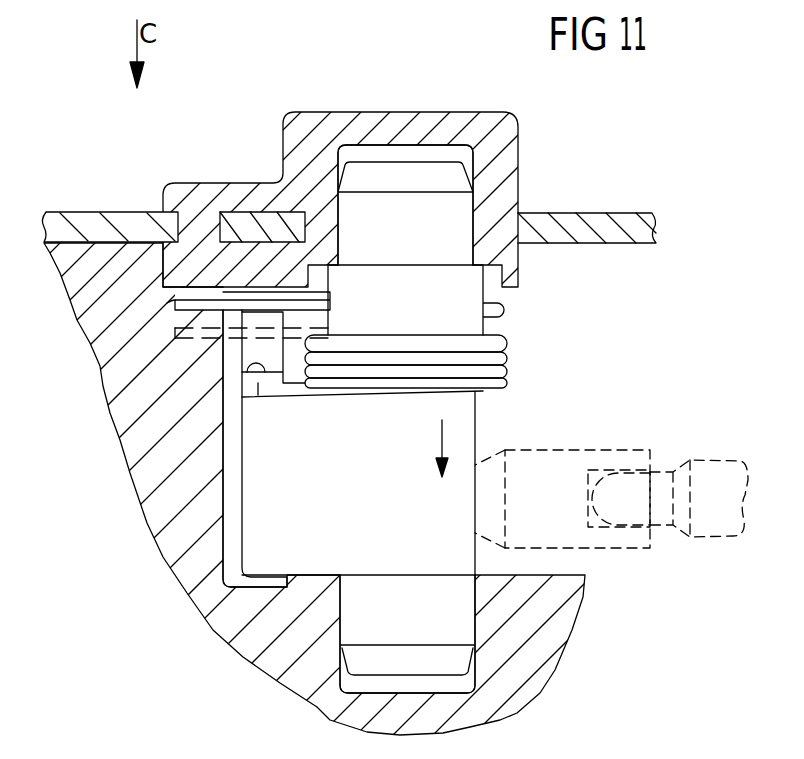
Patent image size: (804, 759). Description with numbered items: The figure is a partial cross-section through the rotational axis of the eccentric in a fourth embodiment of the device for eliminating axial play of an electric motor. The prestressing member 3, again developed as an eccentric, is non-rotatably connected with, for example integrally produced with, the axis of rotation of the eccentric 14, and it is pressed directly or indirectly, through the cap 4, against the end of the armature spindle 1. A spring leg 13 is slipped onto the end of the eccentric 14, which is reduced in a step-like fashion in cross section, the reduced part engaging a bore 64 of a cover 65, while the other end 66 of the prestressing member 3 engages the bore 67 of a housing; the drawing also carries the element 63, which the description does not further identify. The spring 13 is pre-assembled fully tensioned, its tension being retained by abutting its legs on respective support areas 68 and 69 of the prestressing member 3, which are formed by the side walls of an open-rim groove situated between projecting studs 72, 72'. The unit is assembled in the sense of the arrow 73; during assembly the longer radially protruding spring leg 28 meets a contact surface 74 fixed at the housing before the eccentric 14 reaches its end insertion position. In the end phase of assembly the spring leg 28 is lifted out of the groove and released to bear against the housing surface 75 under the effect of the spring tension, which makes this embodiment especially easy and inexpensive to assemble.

The armature spindle 1 is at (705, 457).
The prestressing member 3 is at (453, 495).
The cap 4 is at (597, 450).
The spring leg 13 is at (497, 355).
The eccentric 14 is at (440, 163).
The spring leg 28 is at (262, 300).
The pressure block 63 is at (462, 292).
The bore 64 is at (352, 215).
The cover 65 is at (507, 168).
The other end 66 is at (453, 603).
The bore 67 is at (448, 690).
The support area 68 is at (258, 387).
The support area 69 is at (247, 350).
The projecting stud 72 is at (176, 369).
The projecting stud 72' is at (148, 433).
The arrow 73 is at (453, 443).
The contact surface 74 is at (167, 303).
The housing surface 75 is at (193, 297).